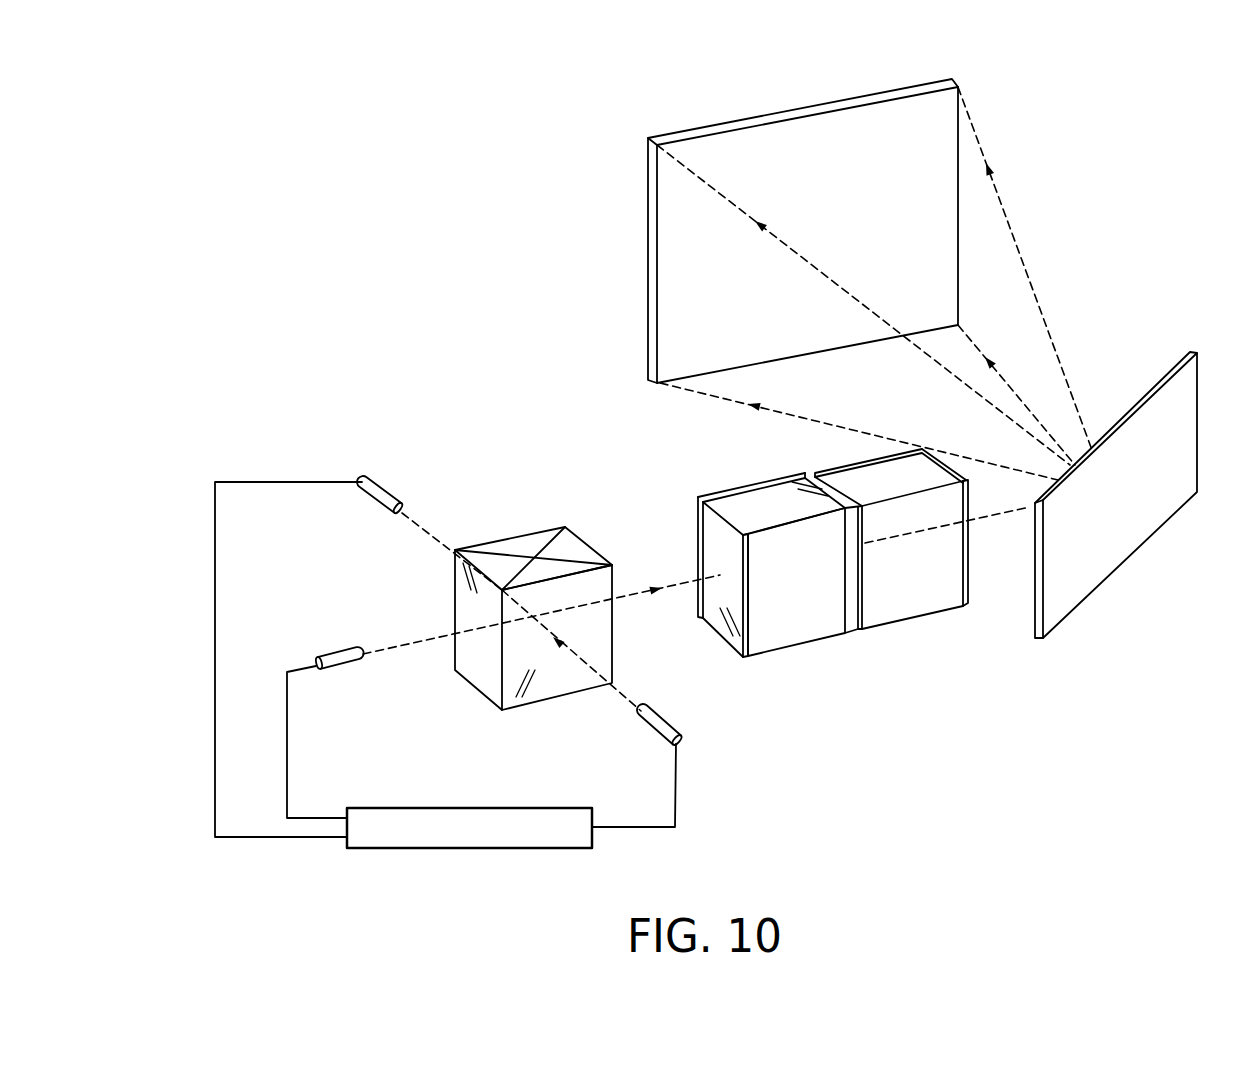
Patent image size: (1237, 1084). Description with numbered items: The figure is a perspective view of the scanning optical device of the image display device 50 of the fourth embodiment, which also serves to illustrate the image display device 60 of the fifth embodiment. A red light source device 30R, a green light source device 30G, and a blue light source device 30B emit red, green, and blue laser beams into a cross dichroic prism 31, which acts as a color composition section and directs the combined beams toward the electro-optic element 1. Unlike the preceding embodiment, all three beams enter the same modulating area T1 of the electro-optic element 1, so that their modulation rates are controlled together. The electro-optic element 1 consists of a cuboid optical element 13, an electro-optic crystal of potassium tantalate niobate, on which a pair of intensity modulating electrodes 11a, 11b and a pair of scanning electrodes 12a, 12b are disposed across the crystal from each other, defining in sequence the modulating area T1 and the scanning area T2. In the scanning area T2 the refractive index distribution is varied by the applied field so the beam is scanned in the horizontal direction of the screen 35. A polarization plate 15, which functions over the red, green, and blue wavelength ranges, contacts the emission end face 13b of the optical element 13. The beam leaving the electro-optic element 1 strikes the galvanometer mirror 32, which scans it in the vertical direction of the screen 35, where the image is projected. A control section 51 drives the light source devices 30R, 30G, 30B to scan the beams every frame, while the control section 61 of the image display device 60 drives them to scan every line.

The image display device 50 is at (706, 496).
The image display device 60 is at (442, 154).
The screen 35 is at (647, 226).
The galvanometer mirror 32 is at (1070, 613).
The cross dichroic prism 31 is at (552, 525).
The red light source device 30R is at (373, 480).
The green light source device 30G is at (347, 668).
The blue light source device 30B is at (652, 728).
The control section 51 is at (469, 860).
The control section 61 is at (477, 848).
The electro-optic element 1 is at (844, 652).
The intensity modulating electrode 11a is at (701, 497).
The intensity modulating electrode 11b is at (770, 652).
The scanning electrode 12a is at (833, 467).
The scanning electrode 12b is at (923, 618).
The optical element 13 is at (713, 618).
The emission end face 13b is at (960, 473).
The polarization plate 15 is at (968, 580).
The modulating area T1 is at (710, 547).
The scanning area T2 is at (905, 463).